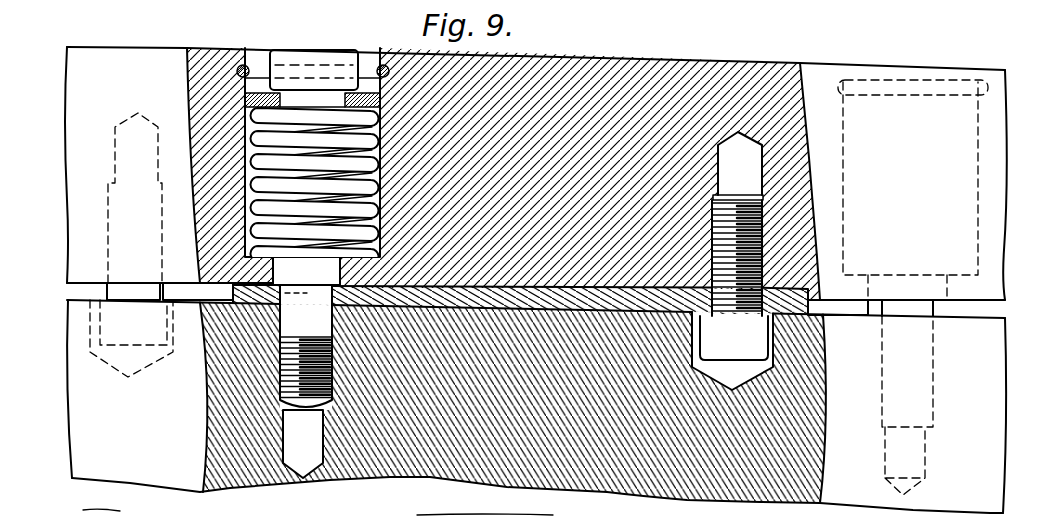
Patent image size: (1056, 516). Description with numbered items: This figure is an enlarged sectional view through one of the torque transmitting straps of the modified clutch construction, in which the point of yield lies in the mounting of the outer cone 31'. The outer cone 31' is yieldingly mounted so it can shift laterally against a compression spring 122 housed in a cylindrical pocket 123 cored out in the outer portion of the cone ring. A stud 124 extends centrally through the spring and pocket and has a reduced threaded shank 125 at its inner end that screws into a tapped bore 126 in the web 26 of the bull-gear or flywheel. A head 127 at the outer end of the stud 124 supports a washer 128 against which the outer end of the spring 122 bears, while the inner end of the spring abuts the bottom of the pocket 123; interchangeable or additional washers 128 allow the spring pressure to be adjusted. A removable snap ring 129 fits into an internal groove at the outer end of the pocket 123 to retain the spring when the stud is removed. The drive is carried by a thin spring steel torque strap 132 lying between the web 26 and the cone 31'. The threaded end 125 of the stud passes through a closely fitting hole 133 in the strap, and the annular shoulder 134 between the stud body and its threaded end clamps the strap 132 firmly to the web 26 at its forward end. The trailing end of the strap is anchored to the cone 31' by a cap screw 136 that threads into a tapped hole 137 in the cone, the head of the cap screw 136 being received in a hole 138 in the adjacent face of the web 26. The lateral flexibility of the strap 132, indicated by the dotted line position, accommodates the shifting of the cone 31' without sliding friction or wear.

The outer cone 31' is at (509, 173).
The web 26 is at (97, 388).
The compression spring 122 is at (283, 148).
The cylindrical pocket 123 is at (247, 227).
The stud 124 is at (297, 268).
The reduced threaded shank 125 is at (282, 388).
The tapped bore 126 is at (305, 419).
The head 127 is at (314, 62).
The washer 128 is at (255, 92).
The snap ring 129 is at (378, 66).
The torque strap 132 is at (812, 310).
The hole 133 is at (253, 298).
The annular shoulder 134 is at (308, 291).
The cap screw 136 is at (757, 330).
The tapped hole 137 is at (750, 180).
The hole 138 is at (773, 365).